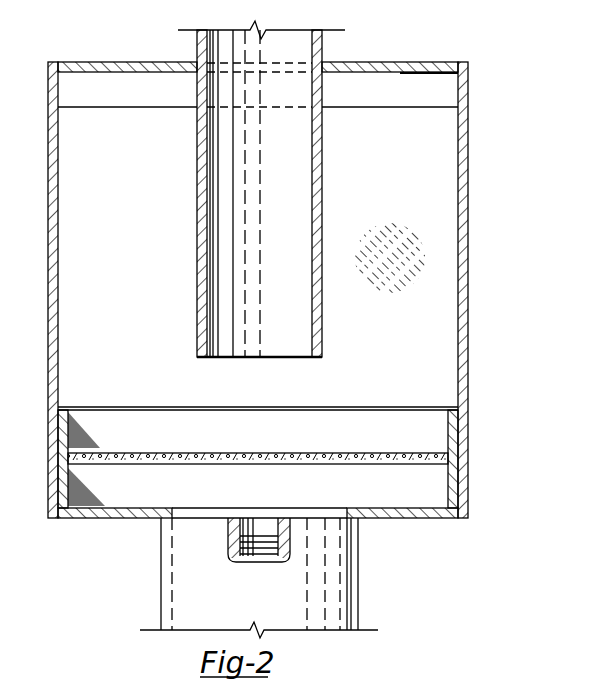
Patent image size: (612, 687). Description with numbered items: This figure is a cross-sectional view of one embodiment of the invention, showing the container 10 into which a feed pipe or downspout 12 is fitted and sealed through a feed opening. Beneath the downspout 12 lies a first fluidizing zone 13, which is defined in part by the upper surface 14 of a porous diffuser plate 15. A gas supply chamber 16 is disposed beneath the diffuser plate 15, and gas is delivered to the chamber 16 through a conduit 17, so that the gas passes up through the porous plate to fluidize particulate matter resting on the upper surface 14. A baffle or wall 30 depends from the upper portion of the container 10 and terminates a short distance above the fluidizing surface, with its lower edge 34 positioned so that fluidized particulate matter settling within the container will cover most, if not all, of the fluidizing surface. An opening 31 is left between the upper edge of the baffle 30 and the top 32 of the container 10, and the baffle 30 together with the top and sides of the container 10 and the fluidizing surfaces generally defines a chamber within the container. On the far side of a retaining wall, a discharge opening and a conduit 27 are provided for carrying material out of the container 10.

The container 10 is at (468, 292).
The downspout 12 is at (323, 218).
The first fluidizing zone 13 is at (270, 393).
The upper surface 14 is at (312, 453).
The porous diffuser plate 15 is at (392, 453).
The gas supply chamber 16 is at (272, 495).
The conduit 17 is at (290, 548).
The conduit 27 is at (358, 582).
The baffle 30 is at (141, 257).
The opening 31 is at (402, 103).
The top 32 is at (410, 74).
The lower edge 34 is at (370, 408).